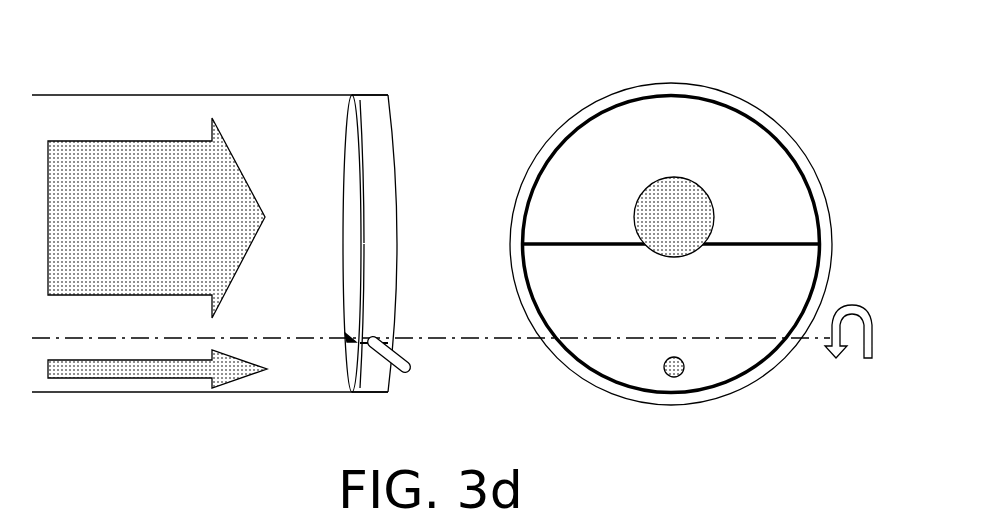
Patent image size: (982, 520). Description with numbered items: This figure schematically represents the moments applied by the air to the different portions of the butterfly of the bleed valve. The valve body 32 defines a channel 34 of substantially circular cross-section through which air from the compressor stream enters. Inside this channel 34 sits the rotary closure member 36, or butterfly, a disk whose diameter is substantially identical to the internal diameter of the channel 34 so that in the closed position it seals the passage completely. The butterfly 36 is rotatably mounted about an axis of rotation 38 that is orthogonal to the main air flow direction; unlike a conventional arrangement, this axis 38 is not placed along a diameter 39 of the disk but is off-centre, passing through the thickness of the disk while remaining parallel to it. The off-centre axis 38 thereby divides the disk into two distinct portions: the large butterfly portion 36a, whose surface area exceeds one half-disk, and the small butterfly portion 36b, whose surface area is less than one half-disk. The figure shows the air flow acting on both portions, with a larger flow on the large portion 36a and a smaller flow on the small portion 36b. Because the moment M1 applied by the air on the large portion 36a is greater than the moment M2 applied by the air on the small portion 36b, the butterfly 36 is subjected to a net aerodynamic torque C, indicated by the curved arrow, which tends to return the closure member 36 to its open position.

The valve body 32 is at (244, 93).
The channel 34 is at (470, 187).
The rotary closure member 36 is at (330, 130).
The large butterfly portion 36a is at (377, 112).
The small butterfly portion 36b is at (365, 375).
The axis of rotation 38 is at (389, 356).
The diameter of the disk 39 is at (800, 243).
The moment applied by the air on the large butterfly portion M1 is at (135, 141).
The moment applied by the air on the small butterfly portion M2 is at (110, 368).
The aerodynamic torque C is at (847, 316).